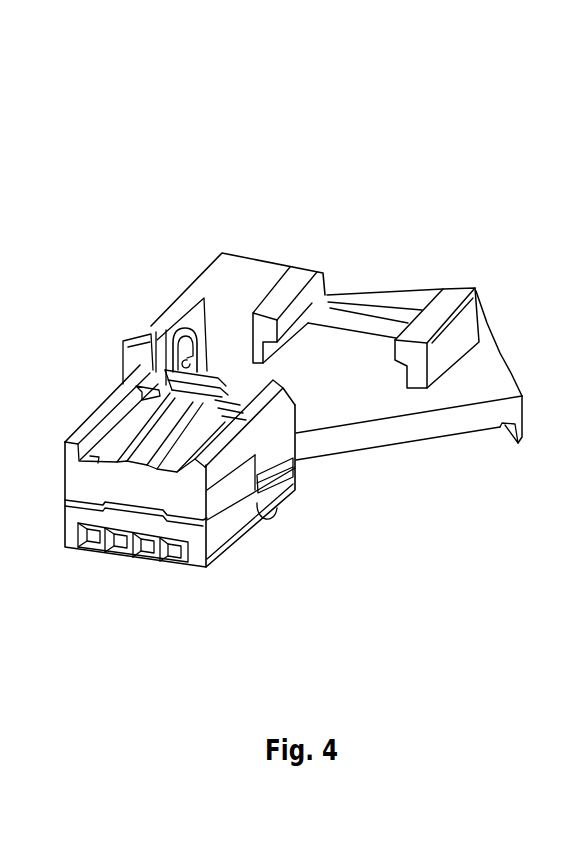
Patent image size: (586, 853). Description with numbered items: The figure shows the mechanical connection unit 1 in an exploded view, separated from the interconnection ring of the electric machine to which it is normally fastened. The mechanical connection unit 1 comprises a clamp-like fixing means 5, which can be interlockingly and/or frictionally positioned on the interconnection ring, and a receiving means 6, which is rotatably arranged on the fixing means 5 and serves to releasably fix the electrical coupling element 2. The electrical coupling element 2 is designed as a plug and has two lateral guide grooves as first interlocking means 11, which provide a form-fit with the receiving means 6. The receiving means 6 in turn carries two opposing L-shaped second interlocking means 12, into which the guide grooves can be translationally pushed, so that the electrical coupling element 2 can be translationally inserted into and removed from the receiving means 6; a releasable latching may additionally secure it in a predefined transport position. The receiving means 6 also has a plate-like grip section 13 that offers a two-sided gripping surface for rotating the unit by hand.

The mechanical connection unit 1 is at (233, 158).
The electrical coupling element 2 is at (180, 537).
The fixing means 5 is at (409, 425).
The receiving means 6 is at (447, 221).
The first interlocking means 11 is at (272, 478).
The second interlocking means 12 is at (383, 394).
The grip section 13 is at (238, 259).